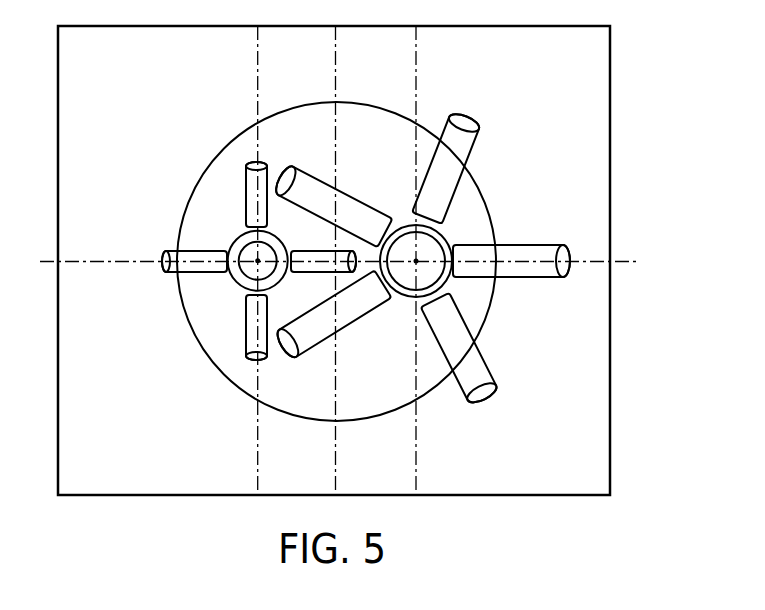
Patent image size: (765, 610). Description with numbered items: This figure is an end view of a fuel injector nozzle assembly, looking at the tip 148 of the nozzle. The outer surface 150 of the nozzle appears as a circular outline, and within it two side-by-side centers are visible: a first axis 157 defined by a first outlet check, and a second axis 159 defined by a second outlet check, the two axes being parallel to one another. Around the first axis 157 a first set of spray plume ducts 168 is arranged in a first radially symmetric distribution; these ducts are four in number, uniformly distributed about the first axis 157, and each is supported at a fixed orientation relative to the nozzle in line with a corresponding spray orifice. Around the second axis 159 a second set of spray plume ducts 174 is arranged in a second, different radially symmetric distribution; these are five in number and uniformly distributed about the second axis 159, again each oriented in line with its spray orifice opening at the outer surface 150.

The tip 148 is at (582, 172).
The outer surface 150 is at (394, 182).
The first axis 157 is at (250, 253).
The second axis 159 is at (424, 255).
The first set of spray plume ducts 168 is at (248, 205).
The second set of spray plume ducts 174 is at (318, 179).